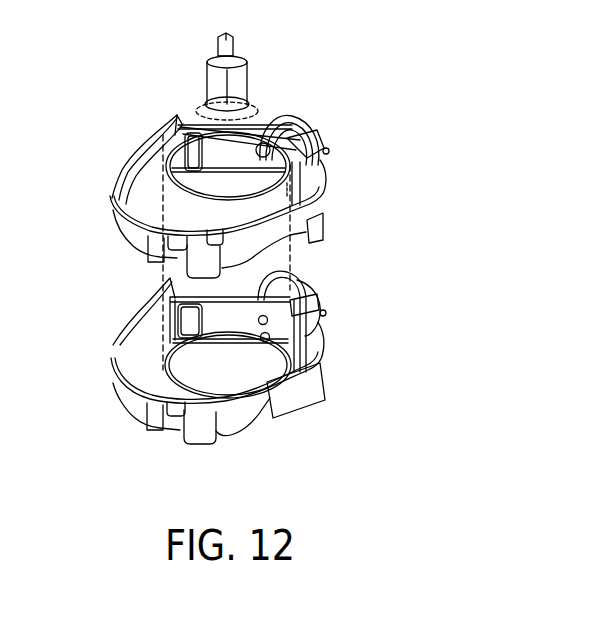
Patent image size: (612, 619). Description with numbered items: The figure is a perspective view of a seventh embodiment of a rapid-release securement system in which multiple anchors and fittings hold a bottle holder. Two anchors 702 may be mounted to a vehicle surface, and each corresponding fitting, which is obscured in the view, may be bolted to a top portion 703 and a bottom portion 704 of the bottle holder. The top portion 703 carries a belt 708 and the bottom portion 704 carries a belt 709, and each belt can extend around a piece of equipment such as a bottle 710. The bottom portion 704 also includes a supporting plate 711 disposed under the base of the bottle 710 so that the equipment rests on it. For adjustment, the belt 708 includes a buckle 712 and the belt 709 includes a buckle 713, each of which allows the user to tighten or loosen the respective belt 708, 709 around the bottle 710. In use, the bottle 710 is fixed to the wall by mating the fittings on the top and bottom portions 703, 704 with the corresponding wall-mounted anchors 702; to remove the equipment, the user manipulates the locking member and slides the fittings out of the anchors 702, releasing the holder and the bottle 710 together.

The anchor 702 is at (305, 145).
The top portion 703 is at (302, 166).
The bottom portion 704 is at (300, 385).
The belt 708 is at (125, 215).
The belt 709 is at (143, 342).
The bottle 710 is at (293, 257).
The supporting plate 711 is at (250, 372).
The buckle 712 is at (165, 205).
The buckle 713 is at (173, 410).